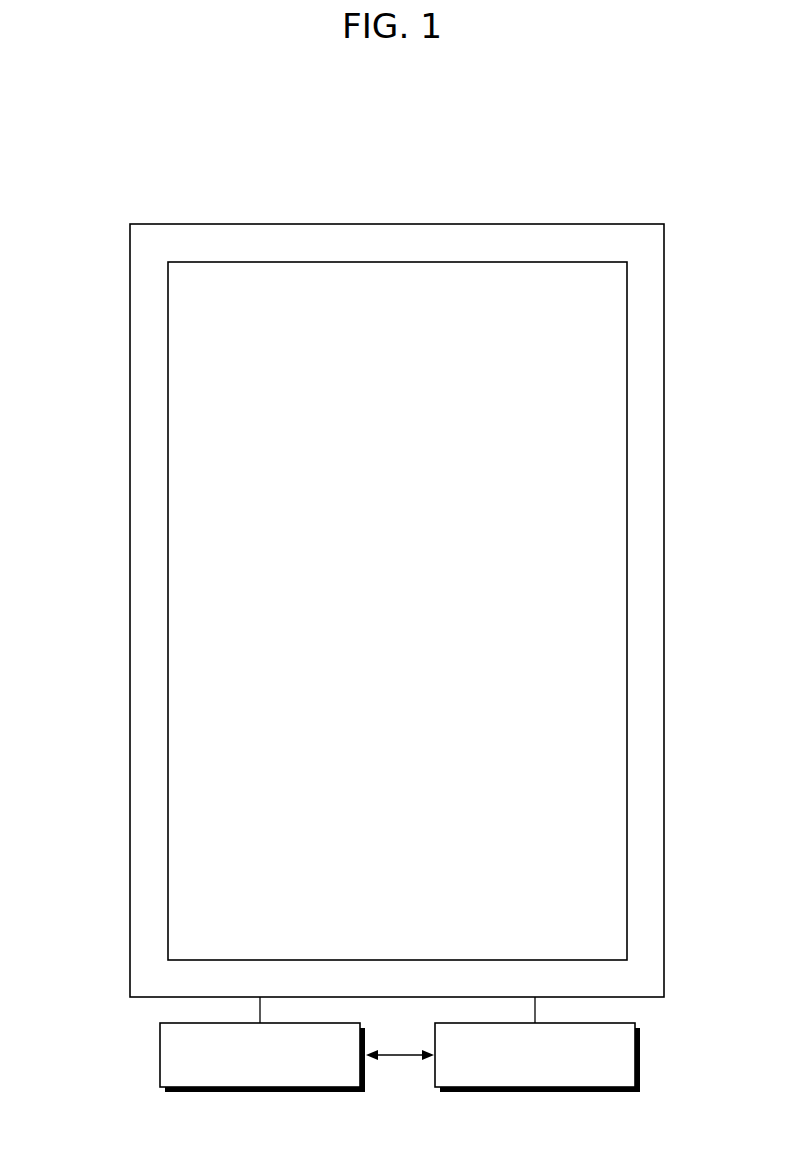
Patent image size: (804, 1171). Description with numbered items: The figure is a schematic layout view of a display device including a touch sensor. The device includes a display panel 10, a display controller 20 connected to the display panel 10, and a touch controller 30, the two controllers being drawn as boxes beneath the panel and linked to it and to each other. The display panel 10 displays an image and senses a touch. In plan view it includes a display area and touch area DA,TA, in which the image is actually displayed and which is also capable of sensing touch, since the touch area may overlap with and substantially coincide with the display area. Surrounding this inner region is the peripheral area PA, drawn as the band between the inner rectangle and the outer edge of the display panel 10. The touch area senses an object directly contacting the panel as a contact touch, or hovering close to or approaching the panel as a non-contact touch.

The display panel 10 is at (664, 359).
The display controller 20 is at (637, 1057).
The touch controller 30 is at (160, 1053).
The display area, touch area DA,TA is at (190, 333).
The peripheral area PA is at (152, 395).